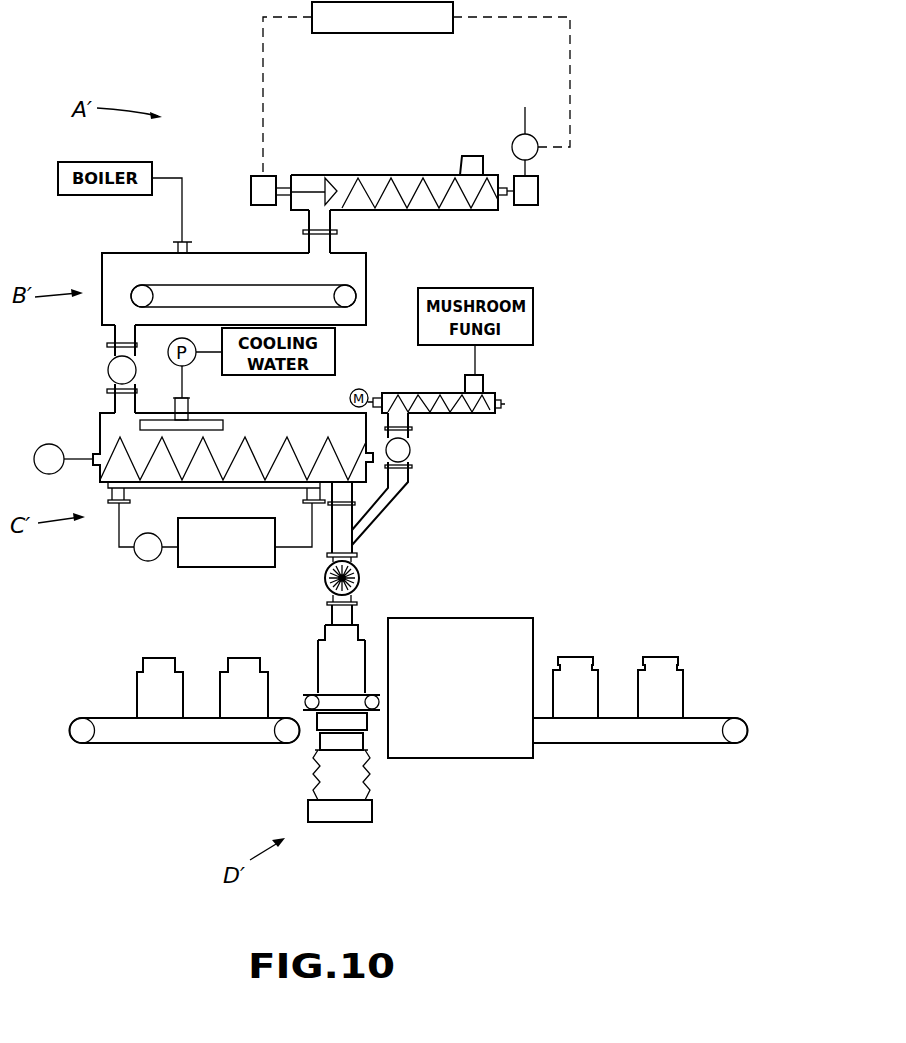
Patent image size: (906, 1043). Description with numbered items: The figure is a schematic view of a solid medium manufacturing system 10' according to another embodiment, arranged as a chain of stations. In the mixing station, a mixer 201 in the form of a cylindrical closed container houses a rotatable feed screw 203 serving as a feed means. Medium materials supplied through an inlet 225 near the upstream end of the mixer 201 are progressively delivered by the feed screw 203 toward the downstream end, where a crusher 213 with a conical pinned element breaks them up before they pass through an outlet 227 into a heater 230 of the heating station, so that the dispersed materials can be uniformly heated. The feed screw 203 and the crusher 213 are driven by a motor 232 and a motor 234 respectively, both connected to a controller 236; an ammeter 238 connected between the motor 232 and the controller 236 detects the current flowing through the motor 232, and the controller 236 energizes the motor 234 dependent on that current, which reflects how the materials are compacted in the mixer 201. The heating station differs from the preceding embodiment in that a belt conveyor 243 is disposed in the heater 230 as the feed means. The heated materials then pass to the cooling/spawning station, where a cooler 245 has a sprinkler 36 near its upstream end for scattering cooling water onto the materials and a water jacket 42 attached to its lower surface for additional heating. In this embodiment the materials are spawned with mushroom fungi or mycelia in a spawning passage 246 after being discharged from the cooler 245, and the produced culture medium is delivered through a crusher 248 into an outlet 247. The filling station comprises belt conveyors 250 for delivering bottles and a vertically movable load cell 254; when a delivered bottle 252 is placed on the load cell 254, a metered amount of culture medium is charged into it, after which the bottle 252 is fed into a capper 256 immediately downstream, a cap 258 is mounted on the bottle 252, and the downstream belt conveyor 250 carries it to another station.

The controller 236 is at (342, 35).
The motor 234 is at (250, 182).
The crusher 213 is at (307, 187).
The mixer 201 is at (411, 216).
The feed screw 203 is at (453, 199).
The inlet 225 is at (450, 173).
The ammeter 238 is at (534, 156).
The motor 232 is at (534, 206).
The outlet 227 is at (303, 226).
The heater 230 is at (100, 268).
The belt conveyor 243 is at (217, 285).
The sprinkler 36 is at (165, 420).
The cooler 245 is at (272, 412).
The water jacket 42 is at (170, 488).
The spawning passage 246 is at (332, 535).
The crusher 248 is at (360, 578).
The outlet 247 is at (337, 620).
The load cell 254 is at (348, 823).
The bottle 252 is at (137, 682).
The belt conveyor 250 is at (193, 743).
The capper 256 is at (472, 758).
The cap 258 is at (575, 657).
The solid medium manufacturing system 10' is at (593, 446).